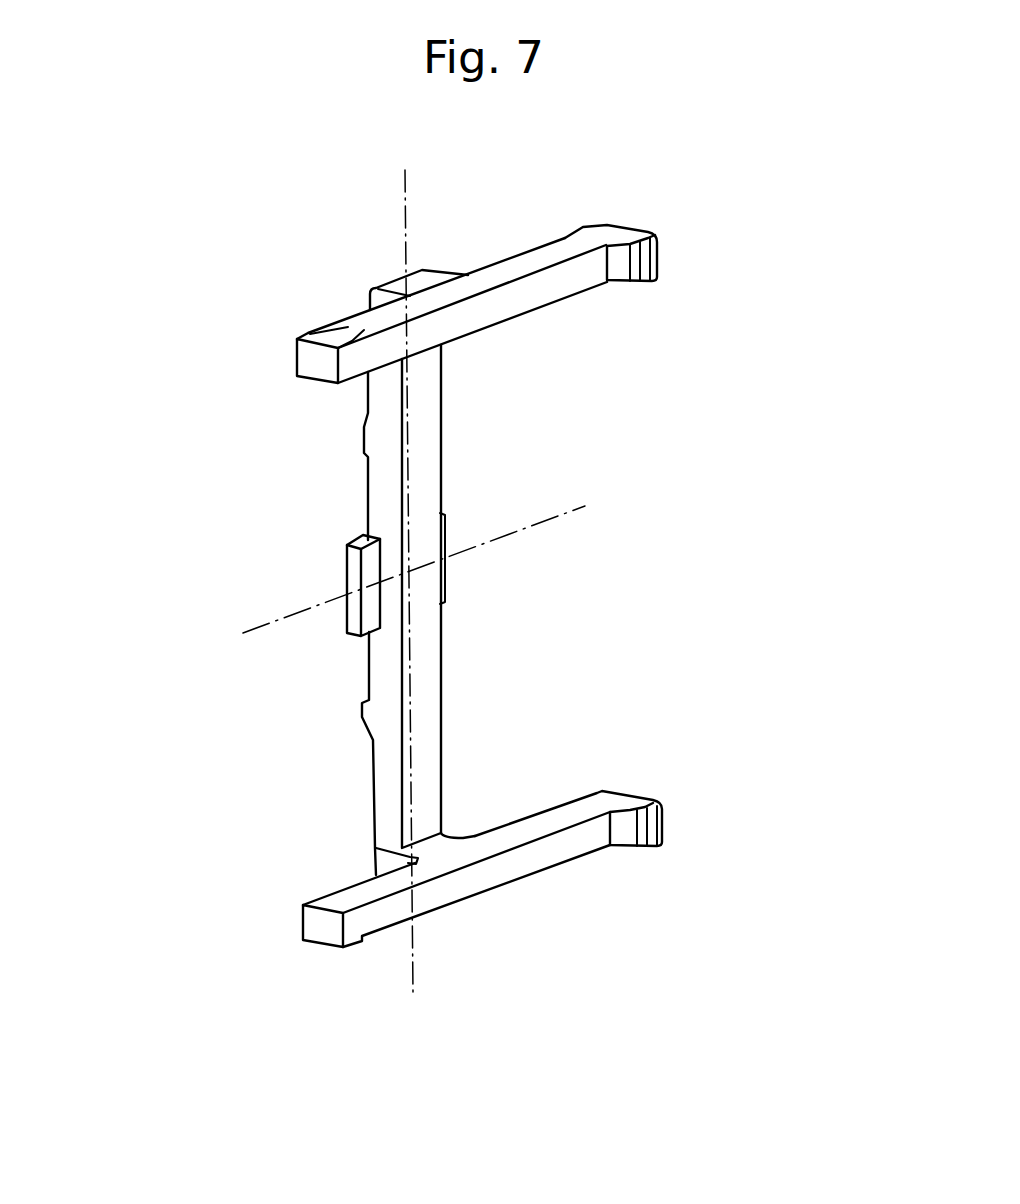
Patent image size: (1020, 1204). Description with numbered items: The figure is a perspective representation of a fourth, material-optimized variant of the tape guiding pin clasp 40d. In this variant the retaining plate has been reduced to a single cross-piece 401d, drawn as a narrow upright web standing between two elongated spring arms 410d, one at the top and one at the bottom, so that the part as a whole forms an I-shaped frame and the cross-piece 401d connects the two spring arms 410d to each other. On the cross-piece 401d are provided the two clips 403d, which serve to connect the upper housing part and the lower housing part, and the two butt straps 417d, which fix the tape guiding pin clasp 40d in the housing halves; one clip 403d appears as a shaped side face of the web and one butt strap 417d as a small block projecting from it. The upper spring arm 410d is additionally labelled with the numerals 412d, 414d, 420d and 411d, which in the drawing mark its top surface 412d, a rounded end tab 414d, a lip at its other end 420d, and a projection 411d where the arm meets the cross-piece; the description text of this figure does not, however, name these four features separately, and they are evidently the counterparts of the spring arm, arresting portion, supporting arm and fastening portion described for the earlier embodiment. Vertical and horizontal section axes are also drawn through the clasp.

The tape guiding pin clasp 40d is at (340, 267).
The spring arm 410d is at (485, 328).
The top surface of upper crossbar 412d is at (510, 272).
The rounded end tab of upper crossbar 414d is at (605, 226).
The end lip of upper crossbar 420d is at (360, 323).
The upper projection of vertical web 411d is at (415, 291).
The cross-piece 401d is at (425, 666).
The clip 403d is at (370, 442).
The butt strap 417d is at (350, 567).